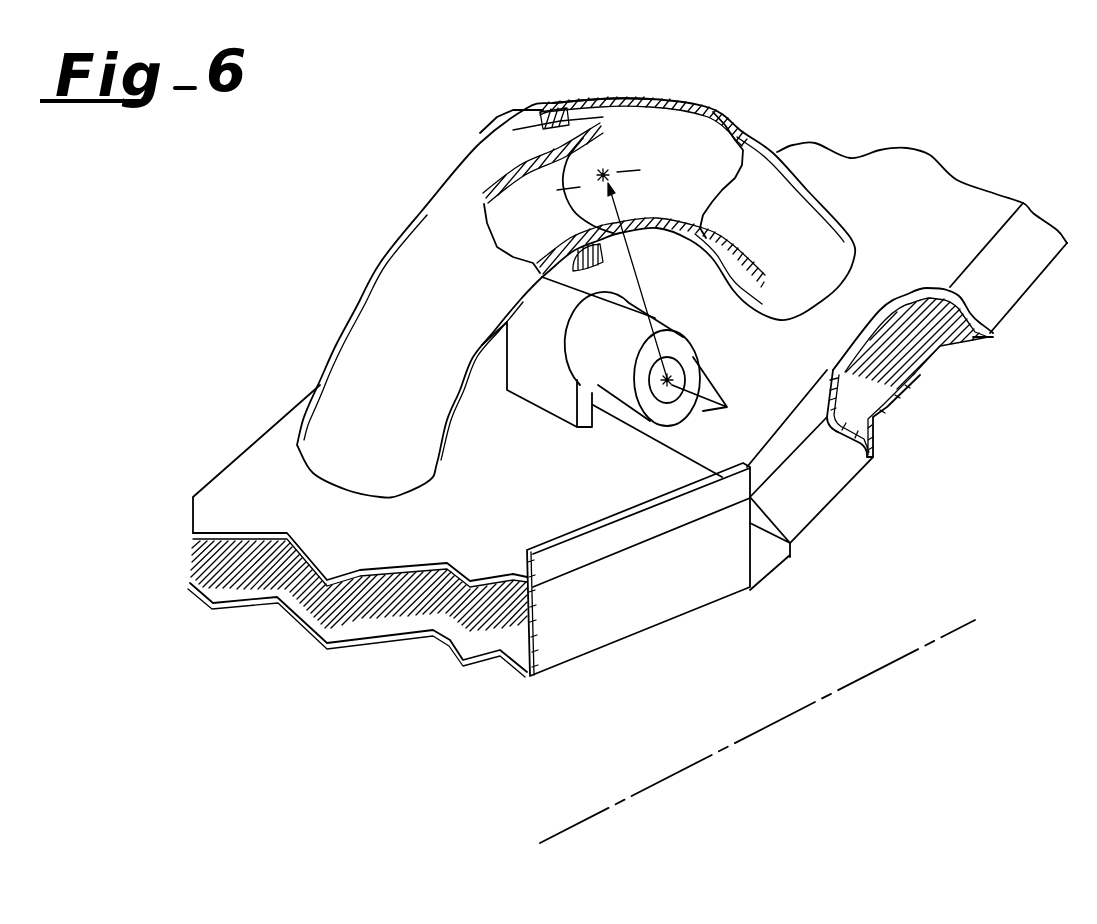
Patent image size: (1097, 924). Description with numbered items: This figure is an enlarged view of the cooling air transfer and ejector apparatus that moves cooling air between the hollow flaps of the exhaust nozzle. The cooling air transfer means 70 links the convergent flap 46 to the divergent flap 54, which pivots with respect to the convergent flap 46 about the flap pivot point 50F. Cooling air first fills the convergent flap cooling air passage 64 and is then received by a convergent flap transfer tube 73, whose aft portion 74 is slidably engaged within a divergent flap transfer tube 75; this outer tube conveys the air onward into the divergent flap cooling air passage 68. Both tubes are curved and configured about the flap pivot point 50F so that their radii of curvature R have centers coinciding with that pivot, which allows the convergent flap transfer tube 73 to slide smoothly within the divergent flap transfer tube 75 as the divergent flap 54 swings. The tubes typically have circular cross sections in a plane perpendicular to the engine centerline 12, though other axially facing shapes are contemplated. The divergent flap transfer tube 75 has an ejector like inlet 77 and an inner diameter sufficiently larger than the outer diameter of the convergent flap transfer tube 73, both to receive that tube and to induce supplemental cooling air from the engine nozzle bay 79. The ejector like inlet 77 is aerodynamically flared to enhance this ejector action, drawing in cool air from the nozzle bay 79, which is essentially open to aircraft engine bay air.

The engine centerline 12 is at (823, 697).
The convergent flap 46 is at (267, 450).
The flap pivot point 50F is at (693, 362).
The divergent flap 54 is at (913, 173).
The convergent flap cooling air passage 64 is at (238, 582).
The divergent flap cooling air passage 68 is at (932, 328).
The cooling air transfer means 70 is at (588, 96).
The convergent flap transfer tube 73 is at (387, 273).
The aft portion 74 is at (583, 140).
The divergent flap transfer tube 75 is at (673, 107).
The ejector like inlet 77 is at (507, 117).
The engine nozzle bay 79 is at (314, 254).
The radii of curvature R is at (643, 290).